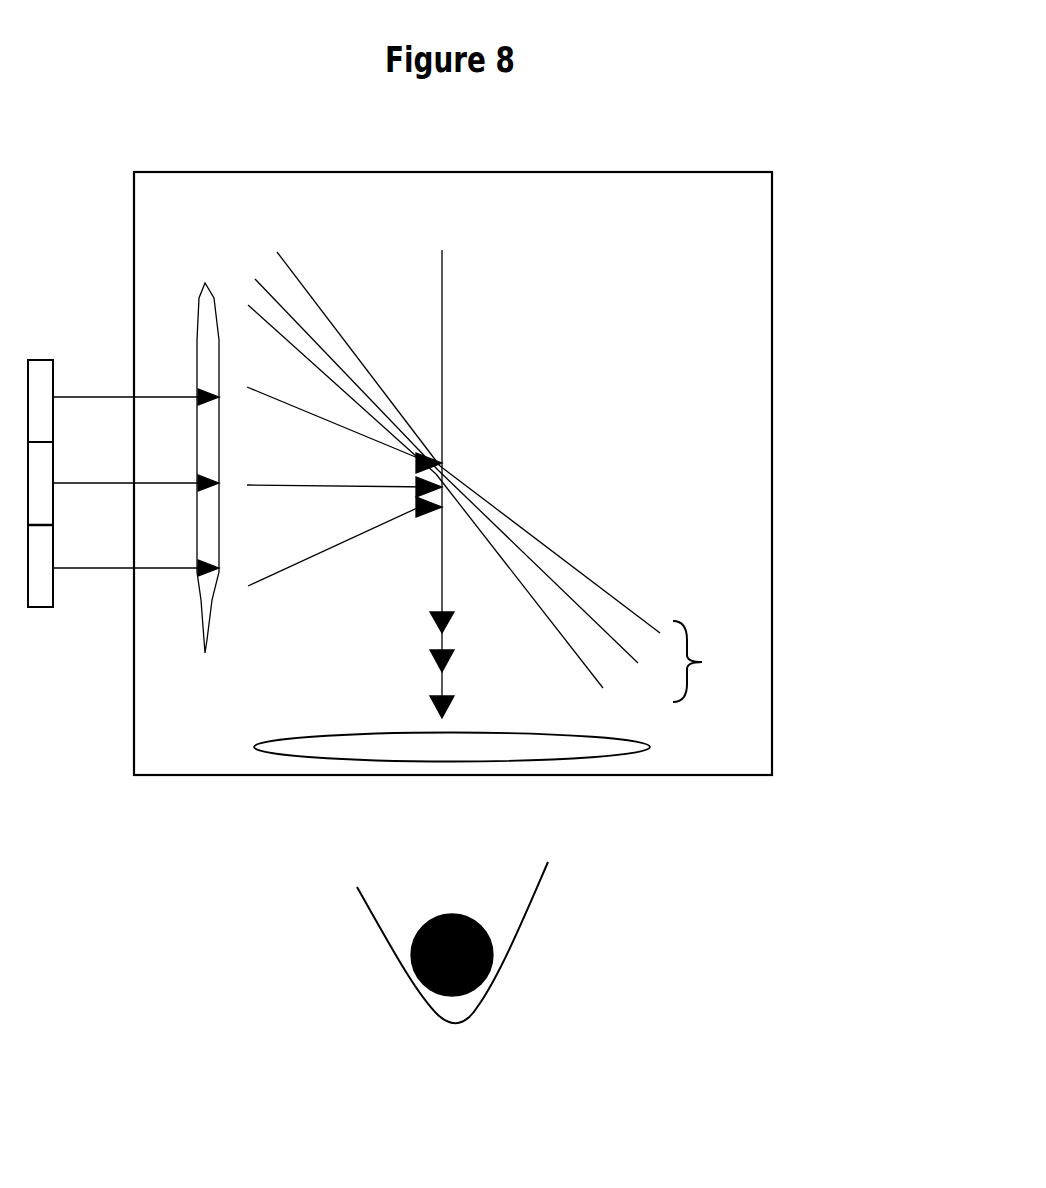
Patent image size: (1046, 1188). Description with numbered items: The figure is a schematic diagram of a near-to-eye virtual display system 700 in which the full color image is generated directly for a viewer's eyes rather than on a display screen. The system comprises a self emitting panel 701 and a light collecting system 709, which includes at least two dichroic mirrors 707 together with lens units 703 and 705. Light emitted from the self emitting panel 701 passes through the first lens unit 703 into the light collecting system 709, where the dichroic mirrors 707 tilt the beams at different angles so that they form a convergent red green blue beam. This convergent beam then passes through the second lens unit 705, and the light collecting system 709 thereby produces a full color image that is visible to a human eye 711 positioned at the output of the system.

The near-to-eye virtual display system 700 is at (130, 870).
The self emitting panel 701 is at (42, 358).
The lens unit 703 is at (205, 283).
The lens unit 705 is at (650, 747).
The dichroic mirrors 707 is at (597, 584).
The light collecting system 709 is at (773, 520).
The human eye 711 is at (538, 938).